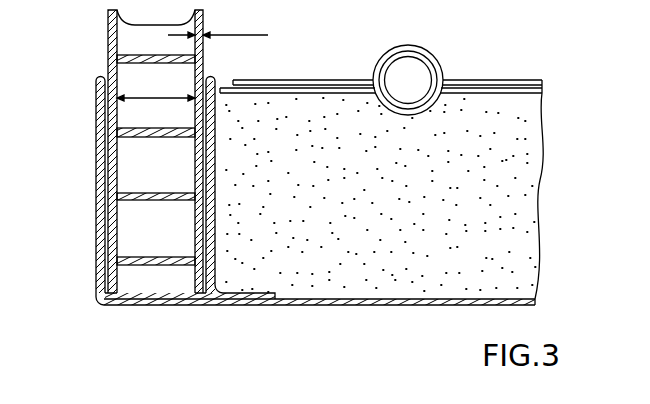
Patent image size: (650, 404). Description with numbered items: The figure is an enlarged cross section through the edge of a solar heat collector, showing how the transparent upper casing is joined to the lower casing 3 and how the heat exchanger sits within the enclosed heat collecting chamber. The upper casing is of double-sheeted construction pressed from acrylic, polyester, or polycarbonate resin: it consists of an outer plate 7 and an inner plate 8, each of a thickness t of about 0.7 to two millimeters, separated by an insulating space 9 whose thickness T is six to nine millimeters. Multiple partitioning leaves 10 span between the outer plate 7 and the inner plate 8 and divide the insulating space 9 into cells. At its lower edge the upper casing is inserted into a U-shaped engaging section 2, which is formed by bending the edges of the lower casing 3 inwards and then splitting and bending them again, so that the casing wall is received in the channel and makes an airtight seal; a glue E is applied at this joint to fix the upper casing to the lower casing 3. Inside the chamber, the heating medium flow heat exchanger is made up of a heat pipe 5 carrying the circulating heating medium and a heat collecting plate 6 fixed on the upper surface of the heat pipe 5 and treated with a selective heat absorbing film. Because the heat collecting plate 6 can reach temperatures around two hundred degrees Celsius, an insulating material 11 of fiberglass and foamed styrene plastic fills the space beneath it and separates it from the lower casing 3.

The U-shaped engaging section 2 is at (290, 189).
The lower casing 3 is at (388, 306).
The heat pipe 5 is at (381, 80).
The heat collecting plate 6 is at (435, 58).
The outer plate 7 is at (156, 151).
The inner plate 8 is at (203, 38).
The insulating space 9 is at (100, 212).
The partitioning leaves 10 is at (143, 137).
The insulating material 11 is at (521, 168).
The glue E is at (102, 75).